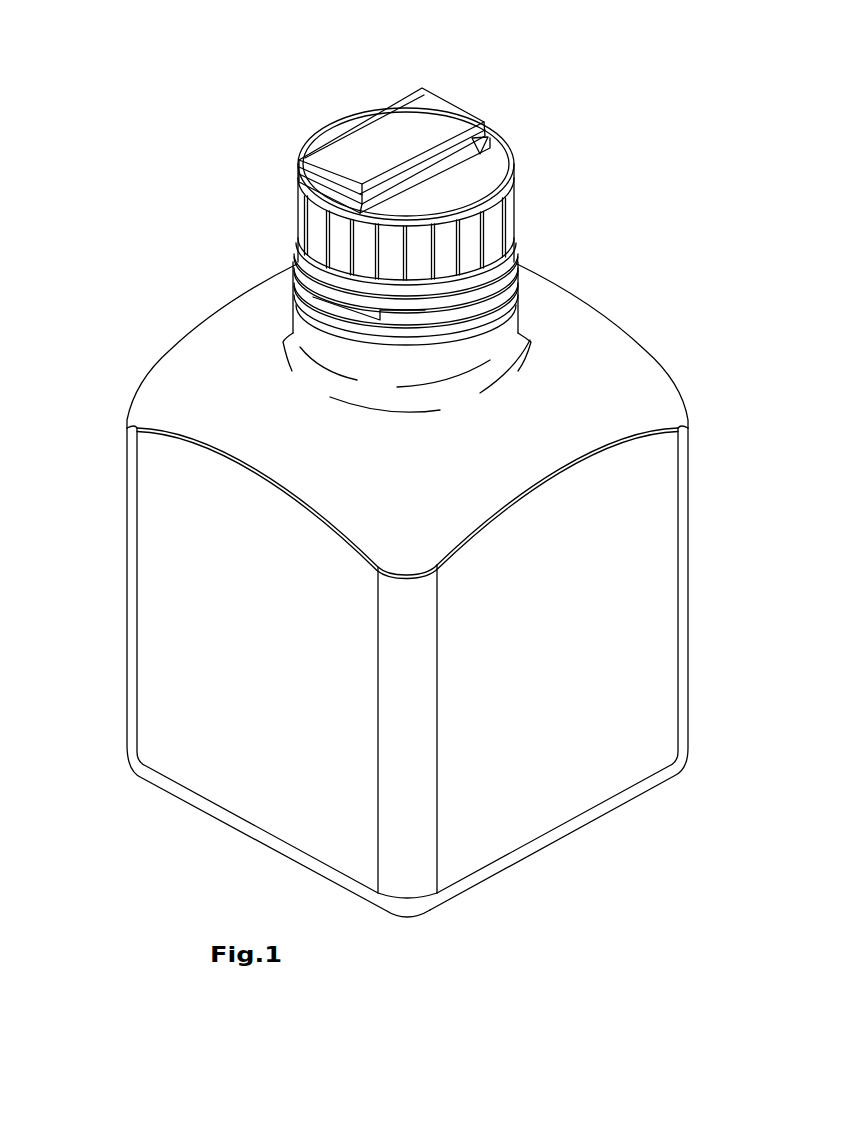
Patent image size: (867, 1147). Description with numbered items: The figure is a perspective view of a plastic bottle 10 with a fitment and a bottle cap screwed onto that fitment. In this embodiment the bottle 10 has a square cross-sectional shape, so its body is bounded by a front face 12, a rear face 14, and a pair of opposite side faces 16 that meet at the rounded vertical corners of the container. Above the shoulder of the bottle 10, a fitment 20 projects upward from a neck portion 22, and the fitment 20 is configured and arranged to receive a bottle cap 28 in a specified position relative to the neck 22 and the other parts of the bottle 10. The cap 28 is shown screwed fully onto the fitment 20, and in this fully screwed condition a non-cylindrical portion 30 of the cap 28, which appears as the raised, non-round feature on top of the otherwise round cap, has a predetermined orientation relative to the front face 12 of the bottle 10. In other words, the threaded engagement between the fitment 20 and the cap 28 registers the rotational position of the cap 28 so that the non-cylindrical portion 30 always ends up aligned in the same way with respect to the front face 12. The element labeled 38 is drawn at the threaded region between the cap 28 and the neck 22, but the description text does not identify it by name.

The plastic bottle 10 is at (163, 357).
The front face 12 is at (205, 648).
The rear face 14 is at (622, 592).
The side faces 16 is at (190, 567).
The fitment 20 is at (298, 262).
The neck portion 22 is at (303, 335).
The bottle cap 28 is at (322, 124).
The non-cylindrical portion 30 is at (402, 130).
The threads 38 is at (310, 302).